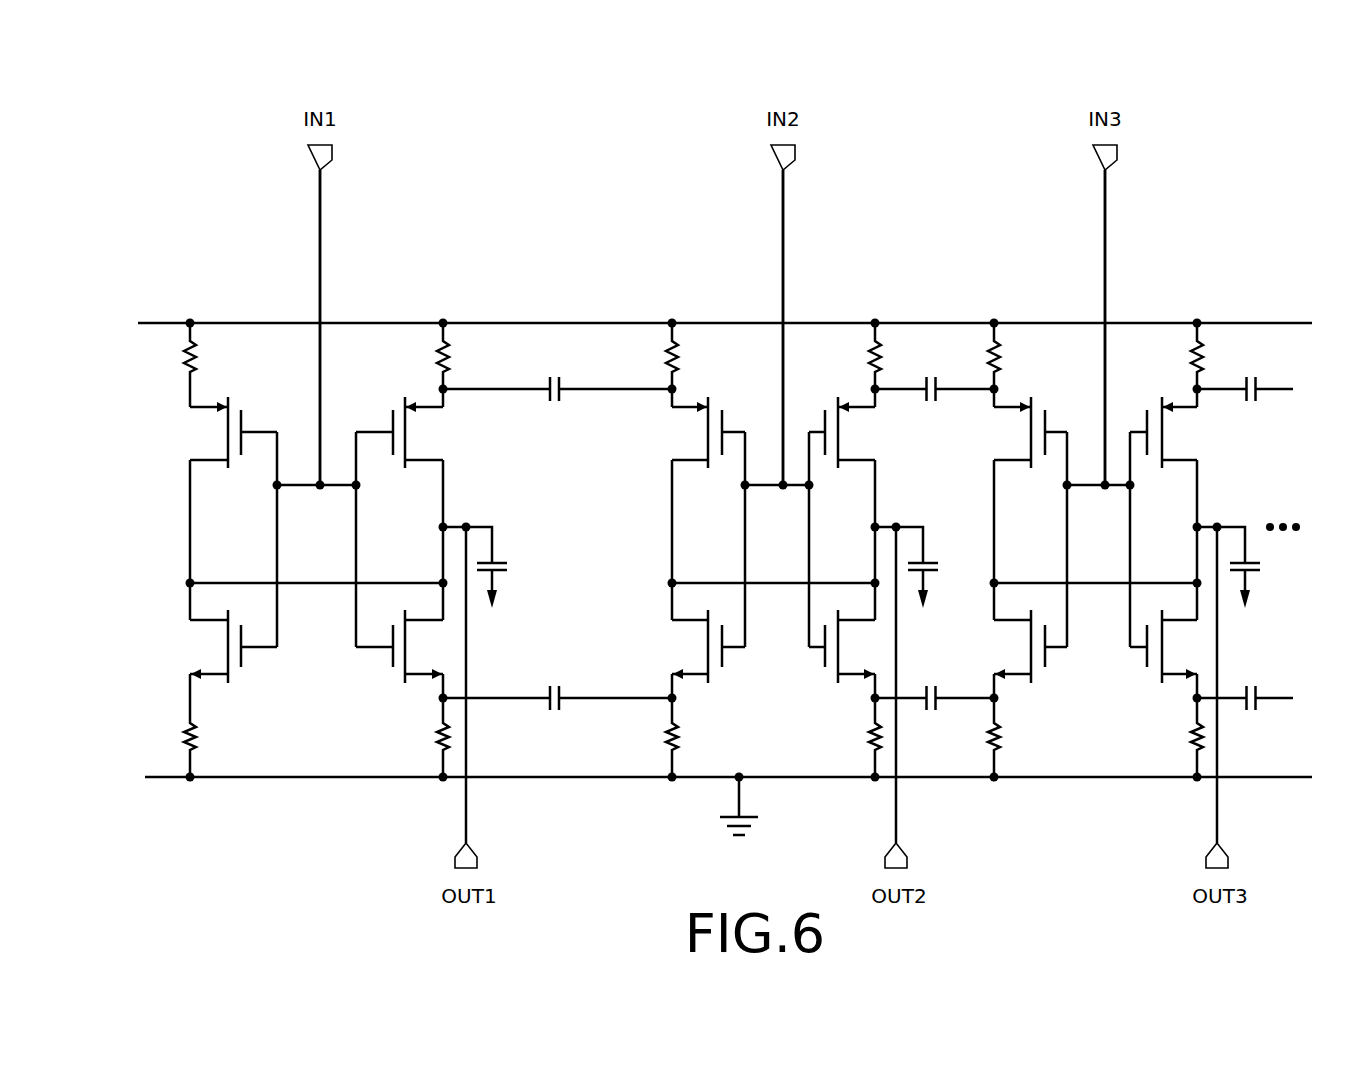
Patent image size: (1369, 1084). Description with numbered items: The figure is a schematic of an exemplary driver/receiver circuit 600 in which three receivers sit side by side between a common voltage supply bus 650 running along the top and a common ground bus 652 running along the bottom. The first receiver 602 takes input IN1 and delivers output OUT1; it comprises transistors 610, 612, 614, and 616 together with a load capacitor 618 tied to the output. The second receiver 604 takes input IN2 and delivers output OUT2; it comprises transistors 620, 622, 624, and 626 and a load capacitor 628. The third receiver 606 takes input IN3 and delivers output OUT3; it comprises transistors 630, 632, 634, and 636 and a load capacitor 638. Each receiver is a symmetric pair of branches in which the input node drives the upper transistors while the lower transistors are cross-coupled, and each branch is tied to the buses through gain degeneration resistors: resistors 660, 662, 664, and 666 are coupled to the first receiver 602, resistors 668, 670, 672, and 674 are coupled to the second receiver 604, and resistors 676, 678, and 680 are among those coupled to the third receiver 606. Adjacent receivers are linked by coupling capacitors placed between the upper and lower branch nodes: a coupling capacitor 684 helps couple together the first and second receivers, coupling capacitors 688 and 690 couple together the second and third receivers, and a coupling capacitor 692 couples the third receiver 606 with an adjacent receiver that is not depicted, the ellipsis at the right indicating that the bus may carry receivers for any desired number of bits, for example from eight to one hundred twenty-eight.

The circuit 600 is at (549, 214).
The first receiver 602 is at (341, 408).
The second receiver 604 is at (779, 402).
The third receiver 606 is at (1110, 412).
The transistor 610 is at (200, 433).
The transistor 612 is at (195, 641).
The transistor 614 is at (440, 432).
The transistor 616 is at (442, 638).
The load capacitor 618 is at (515, 562).
The transistor 620 is at (683, 428).
The transistor 622 is at (688, 645).
The transistor 624 is at (858, 433).
The transistor 626 is at (865, 645).
The load capacitor 628 is at (935, 550).
The transistor 630 is at (1020, 435).
The transistor 632 is at (1015, 645).
The transistor 634 is at (555, 410).
The transistor 636 is at (1190, 640).
The load capacitor 638 is at (1268, 565).
The voltage supply bus 650 is at (158, 323).
The ground bus 652 is at (158, 790).
The gain degeneration resistor 660 is at (205, 365).
The gain degeneration resistor 662 is at (205, 730).
The gain degeneration resistor 664 is at (425, 355).
The gain degeneration resistor 666 is at (425, 733).
The gain degeneration resistor 668 is at (690, 350).
The gain degeneration resistor 670 is at (690, 728).
The gain degeneration resistor 672 is at (856, 355).
The gain degeneration resistor 674 is at (858, 732).
The gain degeneration resistor 676 is at (1010, 352).
The gain degeneration resistor 678 is at (1010, 725).
The gain degeneration resistor 680 is at (1170, 355).
The coupling capacitor 684 is at (1190, 435).
The coupling capacitor 688 is at (945, 372).
The coupling capacitor 690 is at (1262, 380).
The coupling capacitor 692 is at (1180, 730).